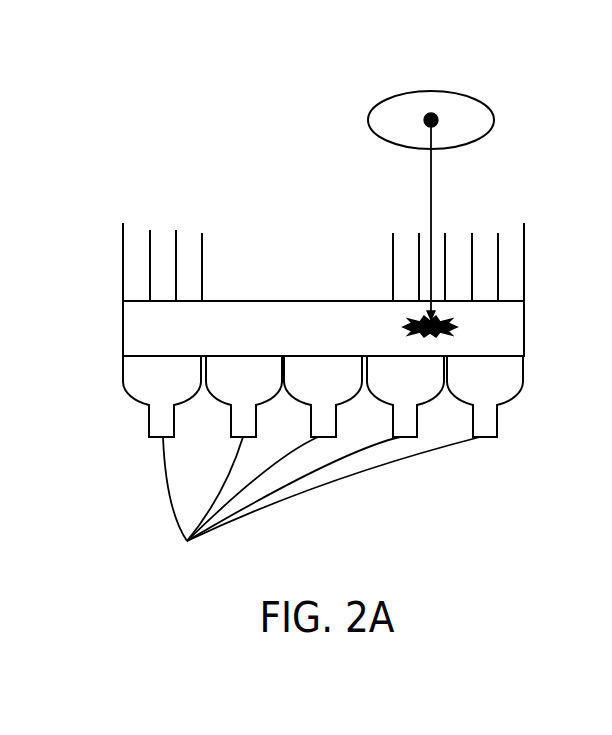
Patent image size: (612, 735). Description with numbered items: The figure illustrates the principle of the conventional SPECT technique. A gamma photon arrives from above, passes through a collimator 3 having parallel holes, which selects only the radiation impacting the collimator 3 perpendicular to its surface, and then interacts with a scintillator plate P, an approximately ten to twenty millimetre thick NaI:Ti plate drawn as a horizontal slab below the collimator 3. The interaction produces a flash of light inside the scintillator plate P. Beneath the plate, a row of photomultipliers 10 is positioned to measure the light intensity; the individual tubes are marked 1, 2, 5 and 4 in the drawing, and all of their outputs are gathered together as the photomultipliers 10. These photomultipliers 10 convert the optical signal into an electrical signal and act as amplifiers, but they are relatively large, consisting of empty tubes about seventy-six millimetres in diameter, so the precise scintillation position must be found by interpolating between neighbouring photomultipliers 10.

The collimator 3 is at (123, 262).
The scintillator plate P is at (123, 330).
The photodetector cell 1 is at (162, 396).
The photodetector cell 2 is at (244, 396).
The photodetector cell 5 is at (405, 396).
The photodetector cell 4 is at (485, 396).
The photomultipliers 10 is at (321, 506).